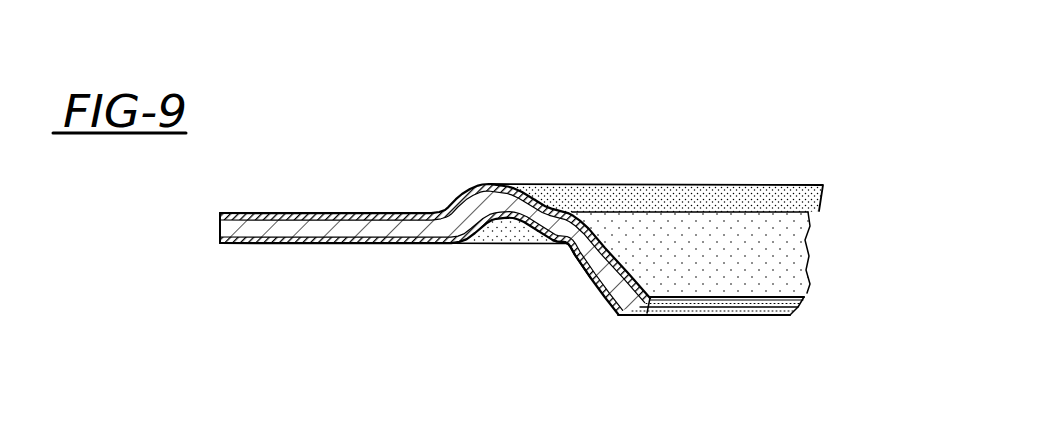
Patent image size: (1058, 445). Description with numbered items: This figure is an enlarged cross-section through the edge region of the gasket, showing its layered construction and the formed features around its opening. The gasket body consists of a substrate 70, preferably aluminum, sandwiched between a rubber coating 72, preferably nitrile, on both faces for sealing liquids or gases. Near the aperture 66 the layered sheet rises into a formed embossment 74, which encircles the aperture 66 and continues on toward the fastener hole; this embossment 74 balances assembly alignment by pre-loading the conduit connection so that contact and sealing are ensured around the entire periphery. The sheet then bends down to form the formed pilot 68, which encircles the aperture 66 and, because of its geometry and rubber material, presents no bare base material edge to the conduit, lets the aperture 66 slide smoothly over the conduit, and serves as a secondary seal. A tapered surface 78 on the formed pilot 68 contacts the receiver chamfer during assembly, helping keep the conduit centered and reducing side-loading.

The aperture 66 is at (648, 303).
The formed pilot 68 is at (617, 288).
The substrate 70 is at (381, 235).
The rubber coating 72 is at (232, 213).
The formed embossment 74 is at (484, 184).
The tapered surface 78 is at (573, 246).